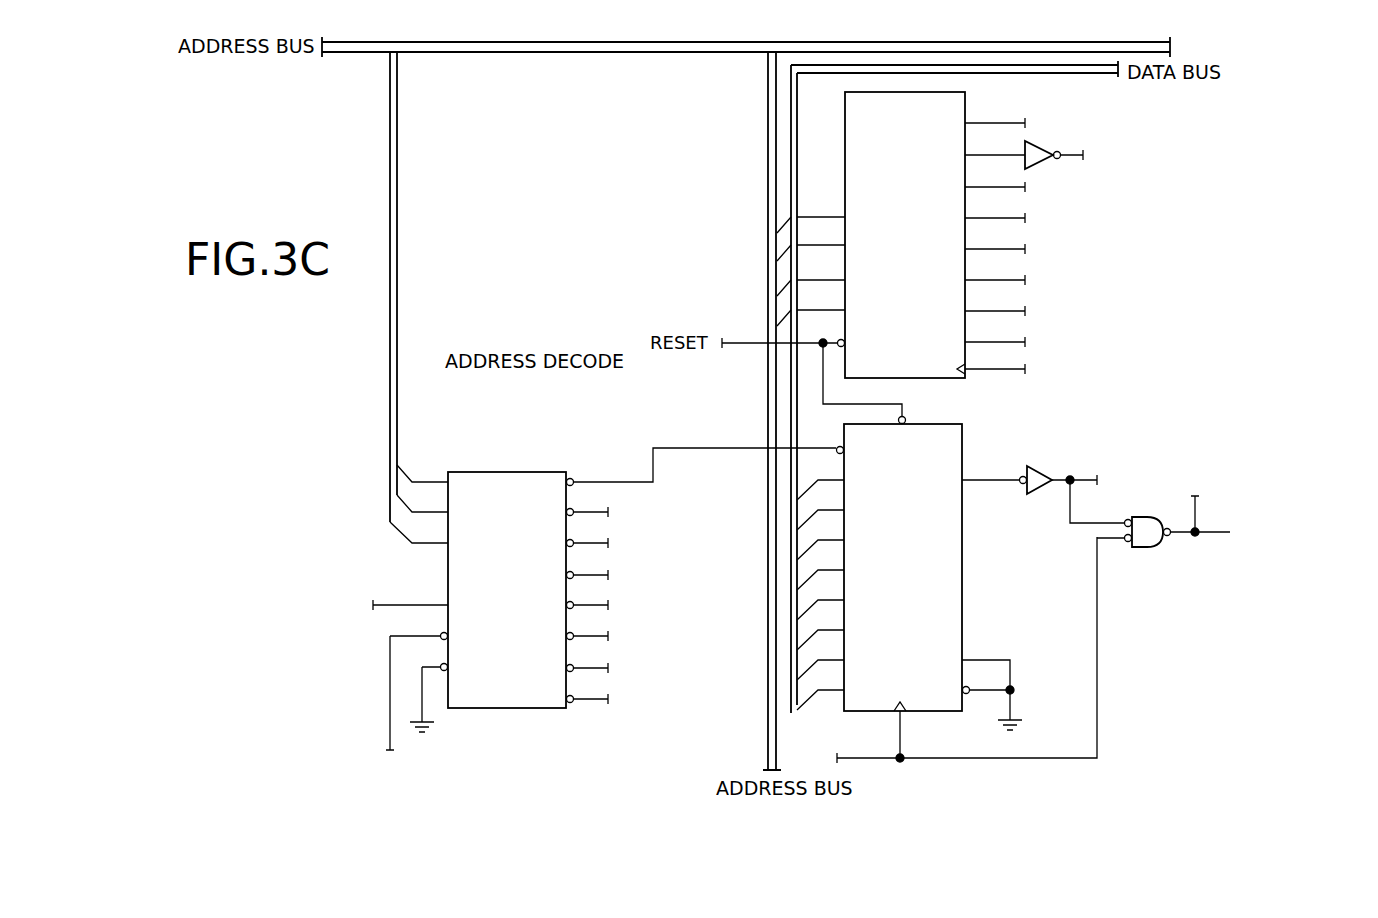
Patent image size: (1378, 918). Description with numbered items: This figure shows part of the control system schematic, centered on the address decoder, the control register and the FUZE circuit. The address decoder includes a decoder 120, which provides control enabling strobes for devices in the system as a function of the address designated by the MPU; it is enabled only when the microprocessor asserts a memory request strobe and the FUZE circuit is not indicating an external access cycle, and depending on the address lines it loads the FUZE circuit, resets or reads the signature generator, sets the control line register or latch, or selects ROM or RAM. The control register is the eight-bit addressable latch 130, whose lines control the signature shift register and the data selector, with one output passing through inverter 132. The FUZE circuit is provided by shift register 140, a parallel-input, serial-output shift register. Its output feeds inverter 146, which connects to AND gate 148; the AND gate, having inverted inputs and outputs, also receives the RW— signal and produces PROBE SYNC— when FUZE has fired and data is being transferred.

The decoder 120 is at (535, 472).
The 8-bit addressable latch 130 is at (965, 378).
The inverter 132 is at (1040, 170).
The shift register 140 is at (962, 586).
The inverter 146 is at (1044, 467).
The AND gate 148 is at (1145, 547).